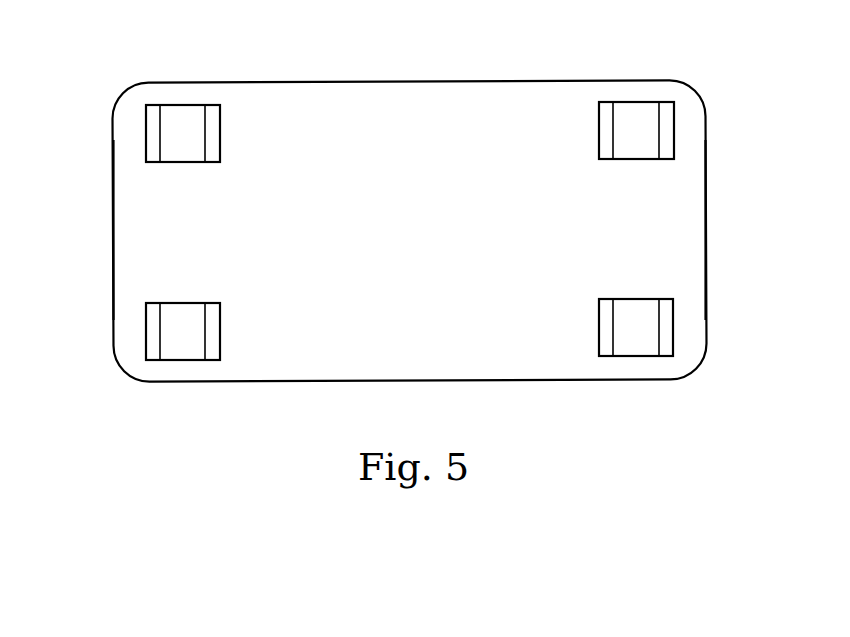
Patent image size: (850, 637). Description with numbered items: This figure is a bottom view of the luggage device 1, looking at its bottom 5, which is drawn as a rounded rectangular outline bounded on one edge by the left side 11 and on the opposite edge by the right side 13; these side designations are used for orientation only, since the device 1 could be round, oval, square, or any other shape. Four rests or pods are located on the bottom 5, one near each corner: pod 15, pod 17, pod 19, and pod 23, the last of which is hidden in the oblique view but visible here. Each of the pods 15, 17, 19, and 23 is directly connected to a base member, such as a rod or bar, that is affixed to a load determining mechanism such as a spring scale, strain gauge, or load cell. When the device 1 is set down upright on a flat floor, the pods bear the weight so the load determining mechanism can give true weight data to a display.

The luggage device 1 is at (724, 85).
The bottom 5 is at (682, 213).
The left side 11 is at (113, 233).
The right side 13 is at (707, 307).
The pod 15 is at (180, 347).
The pod 17 is at (180, 118).
The pod 19 is at (638, 115).
The pod 23 is at (638, 343).